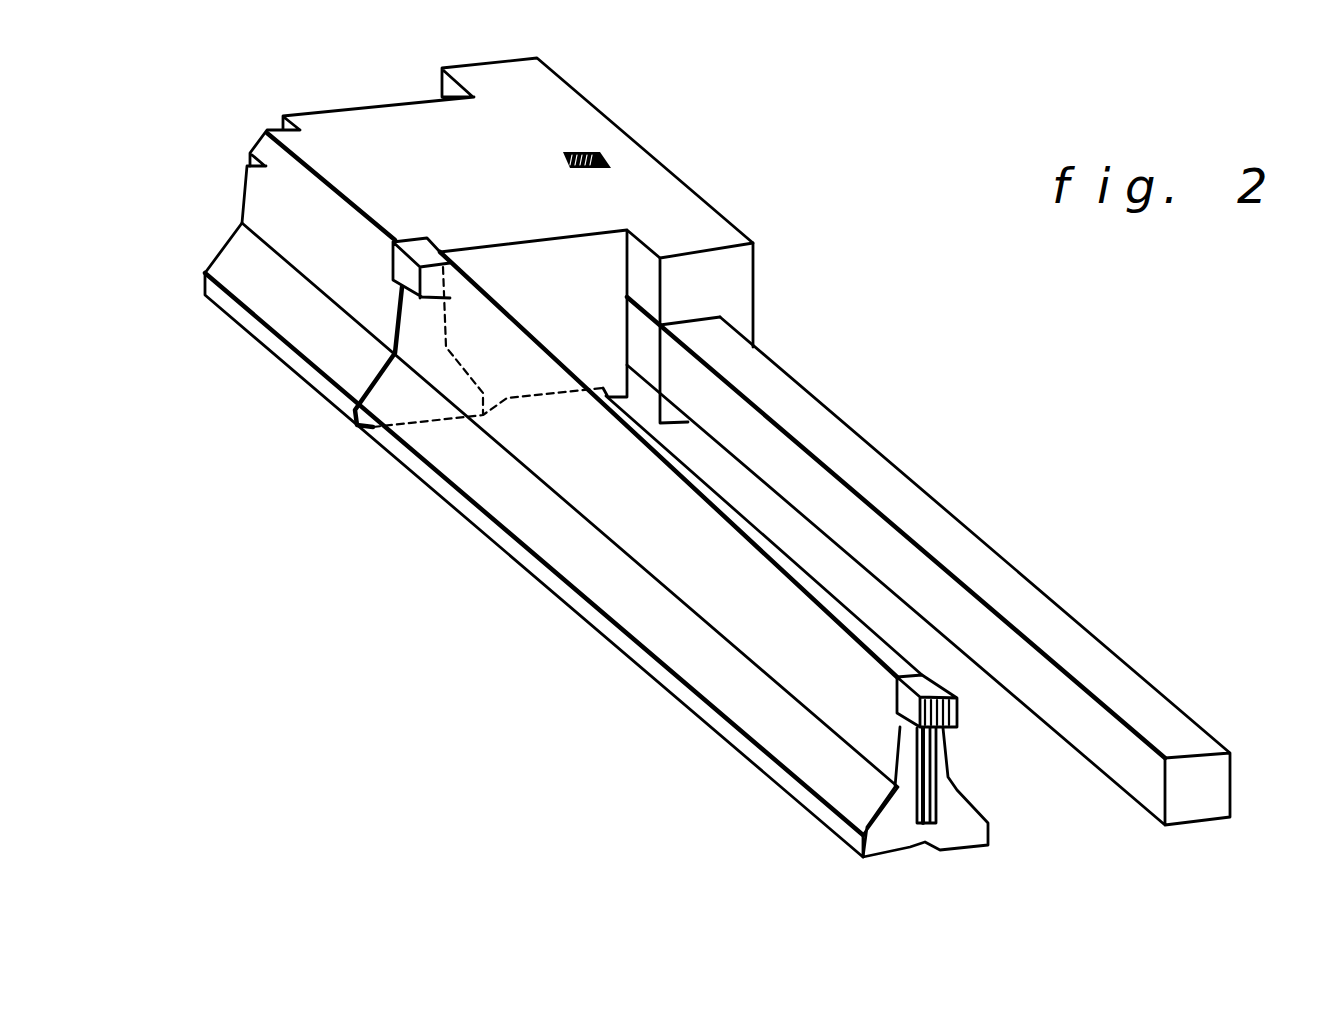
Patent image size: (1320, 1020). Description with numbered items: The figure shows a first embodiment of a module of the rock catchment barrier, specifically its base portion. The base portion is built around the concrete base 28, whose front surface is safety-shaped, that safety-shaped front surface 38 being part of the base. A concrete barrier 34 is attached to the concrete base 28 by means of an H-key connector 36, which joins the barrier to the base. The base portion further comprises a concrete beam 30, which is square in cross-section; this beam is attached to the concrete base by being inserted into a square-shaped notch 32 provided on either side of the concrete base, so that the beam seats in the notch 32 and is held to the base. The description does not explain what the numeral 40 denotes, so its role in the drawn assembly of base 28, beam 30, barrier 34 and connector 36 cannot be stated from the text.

The concrete base 28 is at (533, 140).
The concrete beam 30 is at (876, 469).
The notch 32 is at (703, 318).
The concrete barrier 34 is at (680, 558).
The H-key connector 36 is at (395, 277).
The safety-shaped front surface 38 is at (300, 258).
The card edge 40 is at (490, 438).